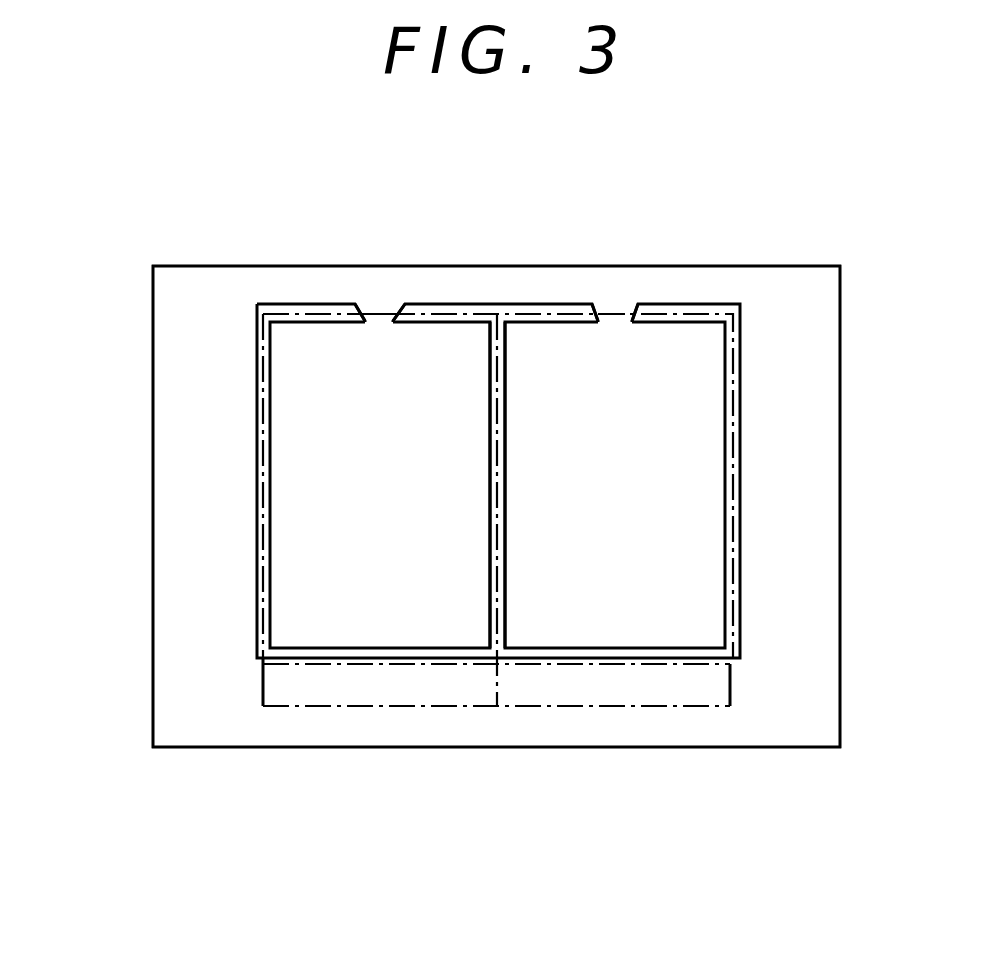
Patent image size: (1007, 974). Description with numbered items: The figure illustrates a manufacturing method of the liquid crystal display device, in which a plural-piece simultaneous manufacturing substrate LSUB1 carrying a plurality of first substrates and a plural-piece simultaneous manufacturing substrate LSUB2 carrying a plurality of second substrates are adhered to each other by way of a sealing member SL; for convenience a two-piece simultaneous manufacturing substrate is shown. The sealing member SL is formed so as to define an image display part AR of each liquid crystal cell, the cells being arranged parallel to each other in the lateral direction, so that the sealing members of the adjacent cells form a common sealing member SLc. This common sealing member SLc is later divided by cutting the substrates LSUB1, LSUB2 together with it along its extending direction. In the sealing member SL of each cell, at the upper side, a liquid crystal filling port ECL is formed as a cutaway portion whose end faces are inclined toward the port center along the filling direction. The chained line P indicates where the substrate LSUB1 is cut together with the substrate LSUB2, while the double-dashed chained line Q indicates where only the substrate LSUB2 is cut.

The plural-piece simultaneous manufacturing substrate LSUB1 is at (250, 747).
The plural-piece simultaneous manufacturing substrate LSUB2 is at (496, 601).
The sealing member SL is at (255, 510).
The common sealing member SLc is at (503, 578).
The liquid crystal filling port ECL is at (378, 306).
The image display part AR is at (497, 485).
The chained line P is at (682, 708).
The double-dashed chained line Q is at (415, 667).